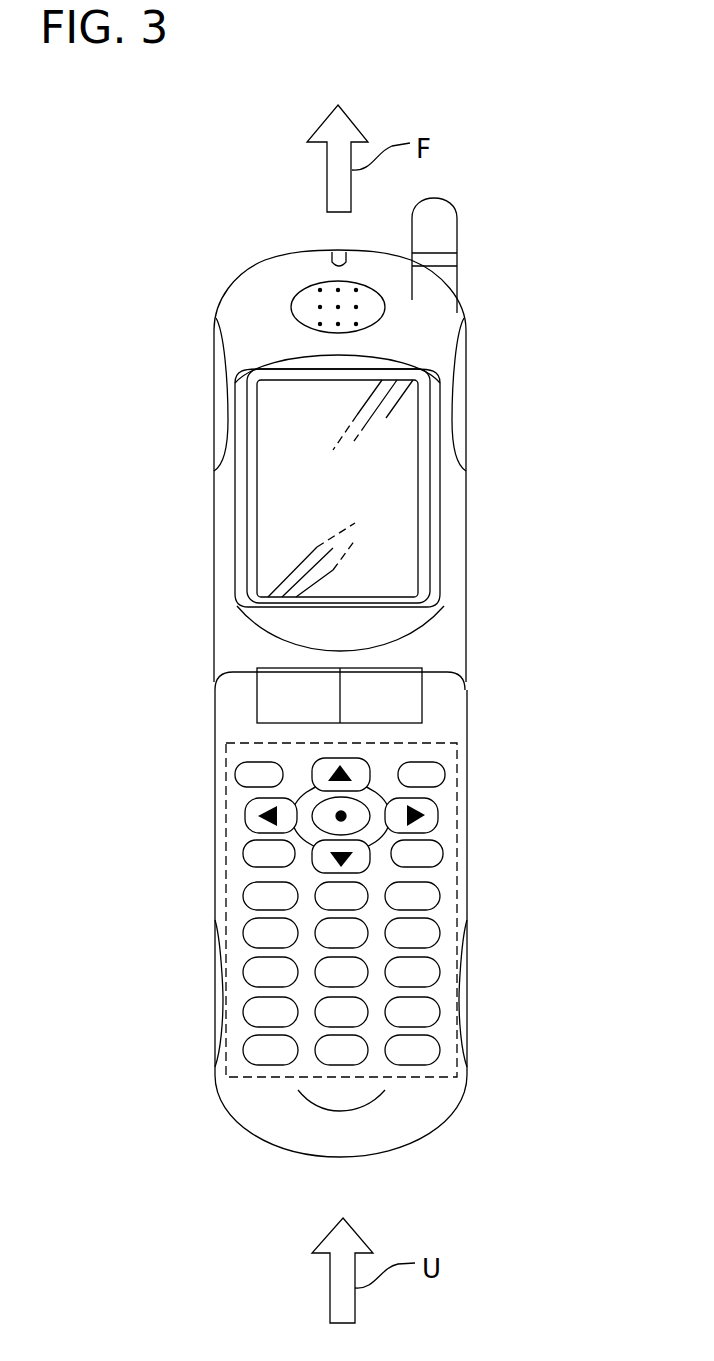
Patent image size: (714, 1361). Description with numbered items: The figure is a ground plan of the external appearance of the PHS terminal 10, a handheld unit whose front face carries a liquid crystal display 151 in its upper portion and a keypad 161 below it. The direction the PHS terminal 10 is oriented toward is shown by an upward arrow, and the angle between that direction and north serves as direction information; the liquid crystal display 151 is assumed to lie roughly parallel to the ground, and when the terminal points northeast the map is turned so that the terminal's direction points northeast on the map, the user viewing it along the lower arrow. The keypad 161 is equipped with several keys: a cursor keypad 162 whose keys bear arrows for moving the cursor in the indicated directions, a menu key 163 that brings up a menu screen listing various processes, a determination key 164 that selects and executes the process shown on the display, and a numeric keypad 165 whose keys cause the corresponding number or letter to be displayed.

The PHS terminal 10 is at (505, 348).
The liquid crystal display 151 is at (375, 487).
The keypad 161 is at (461, 826).
The cursor keypad 162 is at (345, 762).
The menu key 163 is at (238, 766).
The determination key 164 is at (343, 828).
The numeric keypad 165 is at (478, 918).